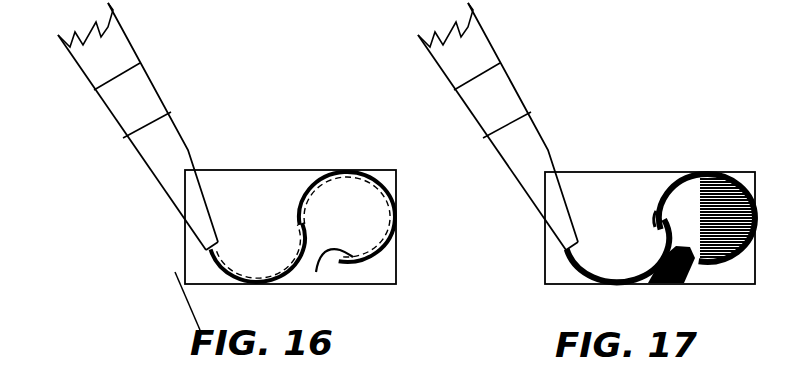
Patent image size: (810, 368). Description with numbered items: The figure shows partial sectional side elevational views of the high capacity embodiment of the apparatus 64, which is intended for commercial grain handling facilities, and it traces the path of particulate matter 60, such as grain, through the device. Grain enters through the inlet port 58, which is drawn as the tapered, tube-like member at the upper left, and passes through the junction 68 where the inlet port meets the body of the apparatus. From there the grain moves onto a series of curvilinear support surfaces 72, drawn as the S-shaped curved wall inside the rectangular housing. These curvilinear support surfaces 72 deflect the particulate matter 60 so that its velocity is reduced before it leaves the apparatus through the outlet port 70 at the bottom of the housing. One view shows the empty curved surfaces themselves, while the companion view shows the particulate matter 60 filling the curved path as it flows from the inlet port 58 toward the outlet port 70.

In FIG. 16, the inlet port 58 is at (158, 87).
In FIG. 17, the inlet port 58 is at (515, 86).
In FIG. 16, the junction 68 is at (188, 147).
In FIG. 17, the junction 68 is at (547, 147).
In FIG. 16, the high capacity embodiment of the apparatus 64 is at (276, 159).
In FIG. 17, the high capacity embodiment of the apparatus 64 is at (639, 116).
In FIG. 16, the outlet port 70 is at (383, 285).
In FIG. 17, the outlet port 70 is at (650, 290).
In FIG. 16, the curvilinear support surfaces 72 is at (212, 249).
In FIG. 17, the particulate matter 60 is at (697, 172).